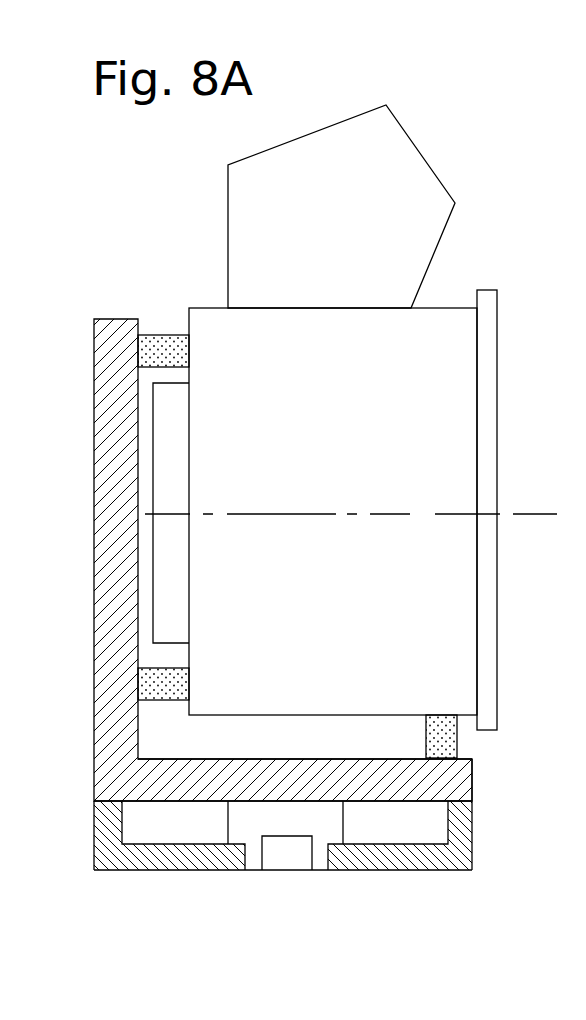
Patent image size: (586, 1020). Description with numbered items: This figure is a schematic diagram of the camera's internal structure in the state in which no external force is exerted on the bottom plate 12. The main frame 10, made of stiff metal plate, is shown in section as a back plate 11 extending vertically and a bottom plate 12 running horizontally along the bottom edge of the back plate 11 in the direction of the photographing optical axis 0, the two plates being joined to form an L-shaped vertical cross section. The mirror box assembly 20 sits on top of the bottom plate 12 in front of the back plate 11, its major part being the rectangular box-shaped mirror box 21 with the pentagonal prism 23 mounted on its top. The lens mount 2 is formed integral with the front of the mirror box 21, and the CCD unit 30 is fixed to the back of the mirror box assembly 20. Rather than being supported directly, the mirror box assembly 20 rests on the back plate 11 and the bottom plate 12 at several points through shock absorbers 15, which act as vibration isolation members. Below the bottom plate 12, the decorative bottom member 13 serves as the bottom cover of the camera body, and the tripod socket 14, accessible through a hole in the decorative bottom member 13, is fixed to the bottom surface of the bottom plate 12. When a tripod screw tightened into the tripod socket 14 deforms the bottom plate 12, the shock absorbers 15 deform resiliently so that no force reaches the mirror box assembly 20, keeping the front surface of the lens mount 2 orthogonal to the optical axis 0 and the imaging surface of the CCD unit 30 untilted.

The photographing optical axis 0 is at (252, 514).
The lens mount 2 is at (483, 468).
The main frame 10 is at (308, 586).
The back plate 11 is at (110, 507).
The bottom plate 12 is at (447, 785).
The decorative bottom member 13 is at (192, 858).
The tripod socket 14 is at (290, 820).
The shock absorber 15 is at (167, 345).
The mirror box assembly 20 is at (364, 417).
The mirror box 21 is at (453, 368).
The pentagonal prism 23 is at (416, 187).
The CCD unit 30 is at (152, 439).